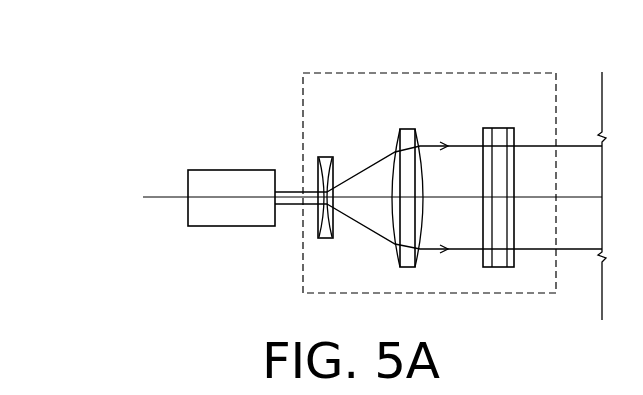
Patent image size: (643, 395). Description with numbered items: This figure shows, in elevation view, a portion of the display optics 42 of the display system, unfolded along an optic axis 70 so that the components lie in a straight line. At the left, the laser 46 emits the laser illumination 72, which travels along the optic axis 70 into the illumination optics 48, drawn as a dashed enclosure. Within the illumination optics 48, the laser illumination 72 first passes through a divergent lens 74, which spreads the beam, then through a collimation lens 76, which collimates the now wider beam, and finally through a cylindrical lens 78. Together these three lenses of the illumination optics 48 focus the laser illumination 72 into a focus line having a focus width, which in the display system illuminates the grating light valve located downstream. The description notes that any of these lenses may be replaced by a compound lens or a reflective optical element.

The display optics 42 is at (253, 97).
The laser 46 is at (223, 168).
The illumination optics 48 is at (433, 72).
The optic axis 70 is at (156, 200).
The laser illumination 72 is at (293, 206).
The divergent lens 74 is at (322, 153).
The collimation lens 76 is at (408, 125).
The cylindrical lens 78 is at (497, 128).